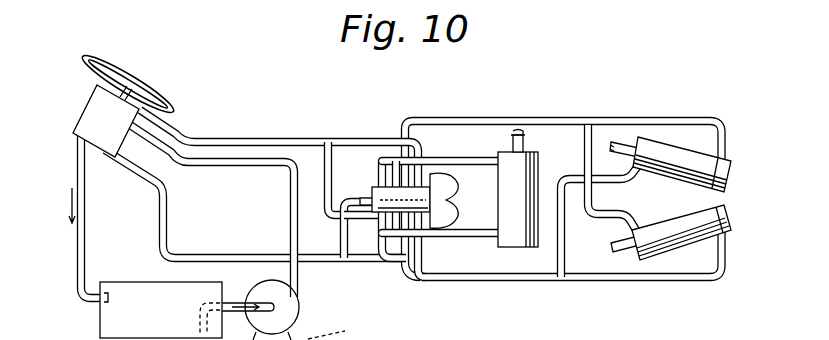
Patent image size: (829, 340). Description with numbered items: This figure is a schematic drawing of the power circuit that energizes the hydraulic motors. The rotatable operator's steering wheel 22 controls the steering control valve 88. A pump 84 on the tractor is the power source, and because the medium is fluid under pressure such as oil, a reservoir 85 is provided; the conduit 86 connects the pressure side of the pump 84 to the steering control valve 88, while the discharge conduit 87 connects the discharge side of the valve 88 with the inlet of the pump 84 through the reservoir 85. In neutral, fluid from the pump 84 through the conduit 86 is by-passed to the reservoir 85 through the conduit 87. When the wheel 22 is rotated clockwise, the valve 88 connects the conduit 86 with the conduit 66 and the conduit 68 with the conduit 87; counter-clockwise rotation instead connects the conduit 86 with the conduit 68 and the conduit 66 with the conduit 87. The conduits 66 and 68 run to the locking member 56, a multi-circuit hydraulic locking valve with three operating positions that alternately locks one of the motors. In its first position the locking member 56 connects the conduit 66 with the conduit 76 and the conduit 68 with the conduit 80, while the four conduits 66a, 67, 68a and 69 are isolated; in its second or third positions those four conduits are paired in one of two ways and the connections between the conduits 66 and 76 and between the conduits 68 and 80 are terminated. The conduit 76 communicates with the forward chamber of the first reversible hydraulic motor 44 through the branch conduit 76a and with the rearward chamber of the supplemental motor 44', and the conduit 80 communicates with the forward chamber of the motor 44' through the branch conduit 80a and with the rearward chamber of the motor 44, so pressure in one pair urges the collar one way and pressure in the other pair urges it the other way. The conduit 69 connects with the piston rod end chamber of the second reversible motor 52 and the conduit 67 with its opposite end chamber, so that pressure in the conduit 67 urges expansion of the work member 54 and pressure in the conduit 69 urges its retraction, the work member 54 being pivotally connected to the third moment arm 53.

The steering wheel 22 is at (168, 106).
The steering control valve 88 is at (90, 107).
The discharge conduit 87 is at (78, 163).
The reservoir 85 is at (100, 316).
The pump 84 is at (288, 311).
The conduit 66 is at (166, 190).
The conduit 86 is at (288, 237).
The conduit 68 is at (278, 139).
The conduit 68a is at (327, 141).
The conduit 69 is at (377, 157).
The conduit 66a is at (350, 199).
The conduit 67 is at (383, 246).
The second reversible hydraulic ram or motor 52 is at (513, 191).
The work member 54 is at (524, 143).
The locking member 56 is at (433, 240).
The conduit 76 is at (452, 119).
The branch conduit 76a is at (592, 177).
The conduit 80 is at (503, 281).
The branch conduit 80a is at (556, 259).
The first reversible hydraulic ram or motor 44 is at (671, 223).
The supplemental first hydraulic ram or motor 44' is at (670, 158).
The third moment arm 53 is at (348, 339).